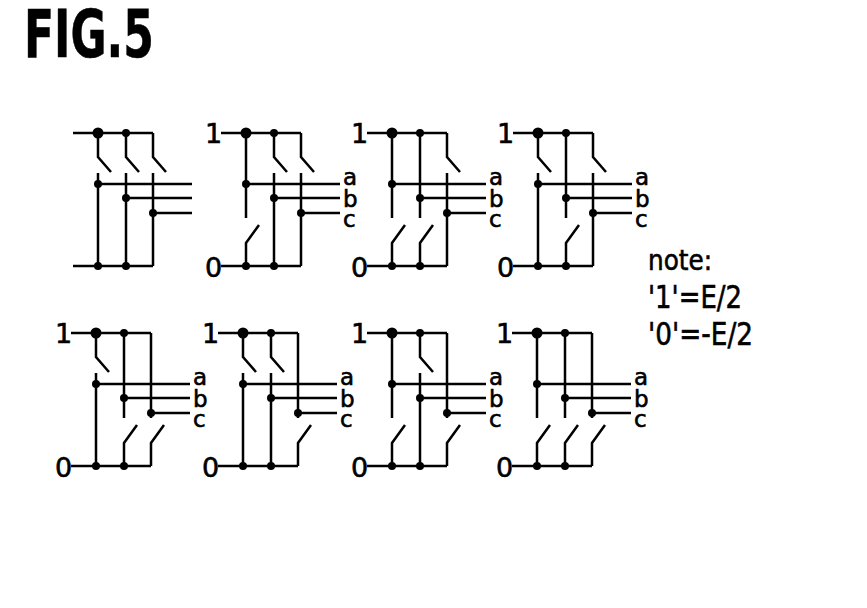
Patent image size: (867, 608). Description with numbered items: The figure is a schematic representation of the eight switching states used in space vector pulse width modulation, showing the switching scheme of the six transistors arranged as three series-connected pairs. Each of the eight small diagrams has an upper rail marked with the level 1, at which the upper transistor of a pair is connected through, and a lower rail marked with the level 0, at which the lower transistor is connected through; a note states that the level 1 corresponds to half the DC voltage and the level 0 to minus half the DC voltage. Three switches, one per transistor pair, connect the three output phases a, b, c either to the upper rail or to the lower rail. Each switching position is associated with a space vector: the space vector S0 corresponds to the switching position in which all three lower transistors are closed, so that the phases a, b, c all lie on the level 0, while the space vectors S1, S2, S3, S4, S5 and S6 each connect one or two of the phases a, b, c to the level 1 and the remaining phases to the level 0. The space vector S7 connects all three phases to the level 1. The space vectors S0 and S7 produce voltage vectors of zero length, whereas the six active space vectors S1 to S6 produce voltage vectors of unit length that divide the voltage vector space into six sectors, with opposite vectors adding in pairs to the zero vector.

The upper switching level 1 is at (105, 133).
The lower switching level 0 is at (105, 267).
The first output phase a is at (151, 177).
The second output phase b is at (166, 199).
The third output phase c is at (178, 219).
The space vector S0 is at (133, 213).
The space vector S1 is at (281, 213).
The space vector S2 is at (427, 213).
The space vector S3 is at (573, 213).
The space vector S4 is at (131, 413).
The space vector S5 is at (278, 413).
The space vector S6 is at (427, 413).
The space vector S7 is at (572, 413).